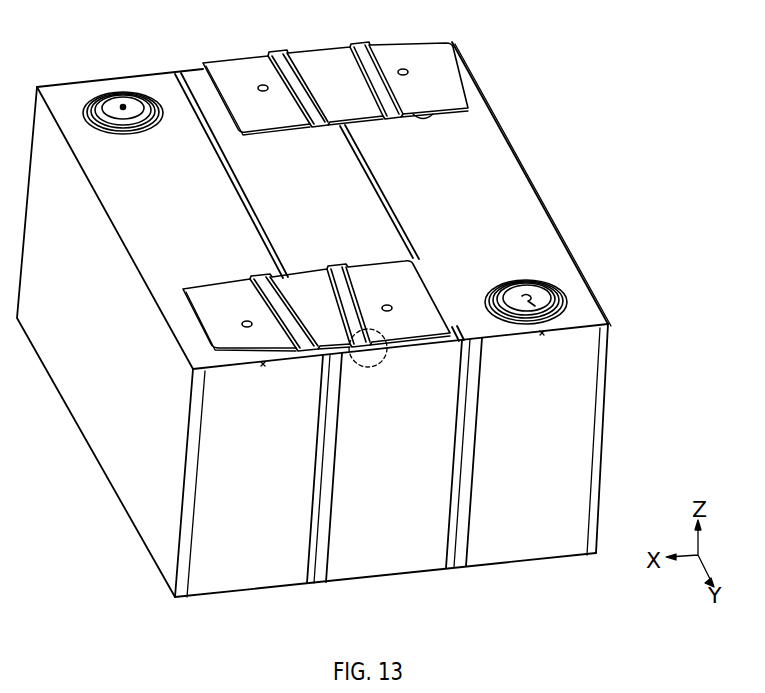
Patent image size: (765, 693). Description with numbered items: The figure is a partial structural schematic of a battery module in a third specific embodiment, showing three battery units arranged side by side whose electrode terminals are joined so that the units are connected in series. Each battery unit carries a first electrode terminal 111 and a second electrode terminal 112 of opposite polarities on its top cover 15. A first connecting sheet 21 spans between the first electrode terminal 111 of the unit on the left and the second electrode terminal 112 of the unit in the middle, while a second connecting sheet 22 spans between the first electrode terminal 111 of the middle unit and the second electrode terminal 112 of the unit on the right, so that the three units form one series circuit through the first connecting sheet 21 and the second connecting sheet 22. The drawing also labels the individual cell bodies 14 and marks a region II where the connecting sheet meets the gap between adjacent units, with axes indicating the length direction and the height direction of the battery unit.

The battery cell 14 is at (240, 579).
The top cover 15 is at (492, 143).
The first connecting sheet 21 is at (397, 272).
The second connecting sheet 22 is at (327, 55).
The first electrode terminal 111 is at (123, 103).
The second electrode terminal 112 is at (553, 311).
The enlarged detail region II is at (397, 363).